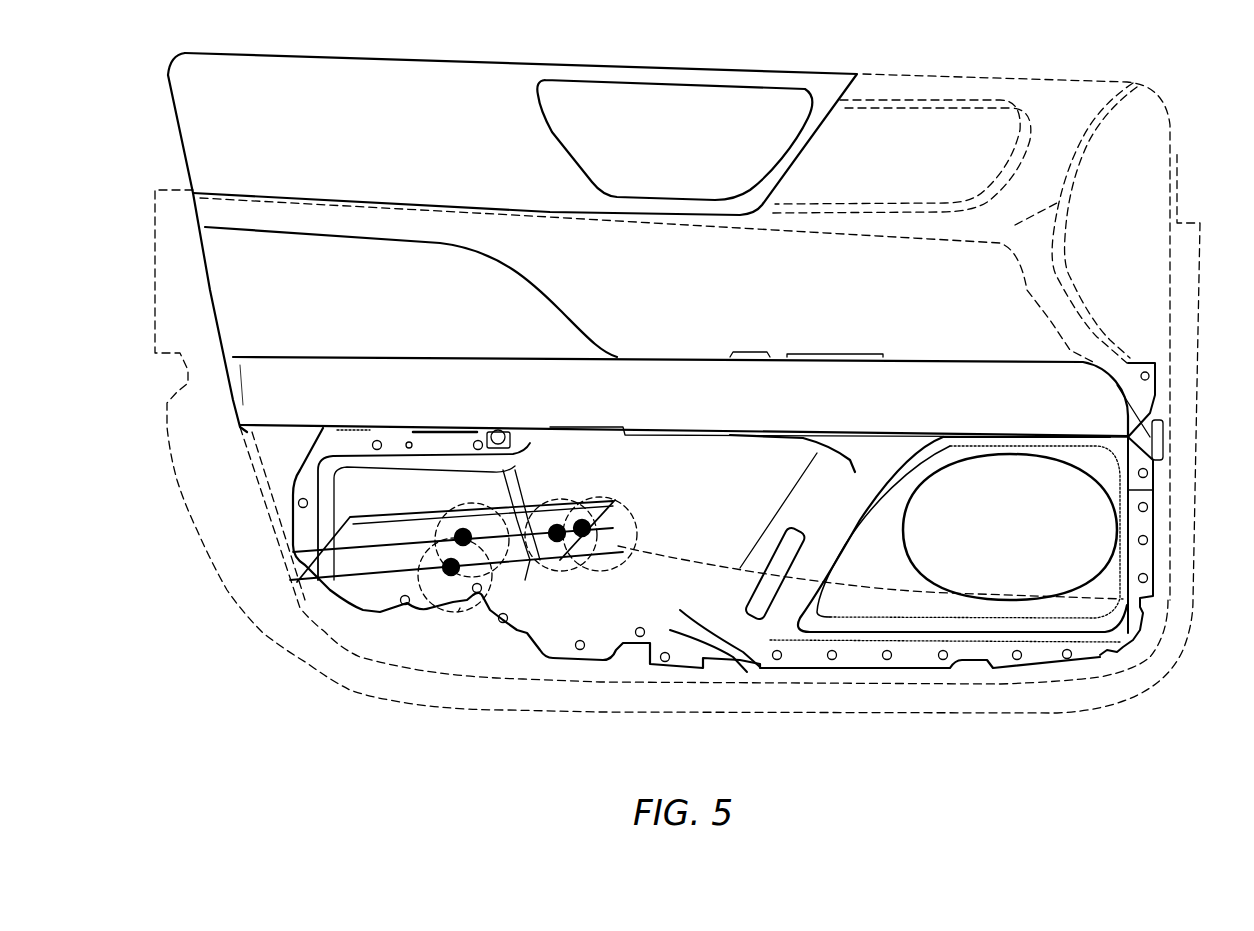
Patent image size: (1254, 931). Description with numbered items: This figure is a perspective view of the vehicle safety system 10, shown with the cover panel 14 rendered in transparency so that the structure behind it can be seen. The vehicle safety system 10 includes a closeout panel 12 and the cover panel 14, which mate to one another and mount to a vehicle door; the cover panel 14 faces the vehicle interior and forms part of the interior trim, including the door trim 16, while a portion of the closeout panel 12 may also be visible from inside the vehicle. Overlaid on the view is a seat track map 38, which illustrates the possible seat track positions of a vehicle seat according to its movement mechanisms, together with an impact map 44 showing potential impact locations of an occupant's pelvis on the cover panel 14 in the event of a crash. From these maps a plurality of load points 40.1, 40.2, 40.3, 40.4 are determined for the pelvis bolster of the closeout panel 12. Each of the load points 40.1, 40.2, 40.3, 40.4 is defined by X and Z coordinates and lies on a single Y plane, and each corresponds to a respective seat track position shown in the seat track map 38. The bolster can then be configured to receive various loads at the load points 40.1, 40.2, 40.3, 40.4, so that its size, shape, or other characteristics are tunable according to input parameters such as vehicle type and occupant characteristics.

The vehicle safety system 10 is at (130, 727).
The closeout panel 12 is at (682, 511).
The cover panel 14 is at (632, 658).
The door trim 16 is at (172, 458).
The seat track map 38 is at (358, 580).
The load point 40.1 is at (588, 540).
The load point 40.2 is at (557, 545).
The load point 40.3 is at (462, 530).
The load point 40.4 is at (460, 612).
The impact map 44 is at (460, 610).